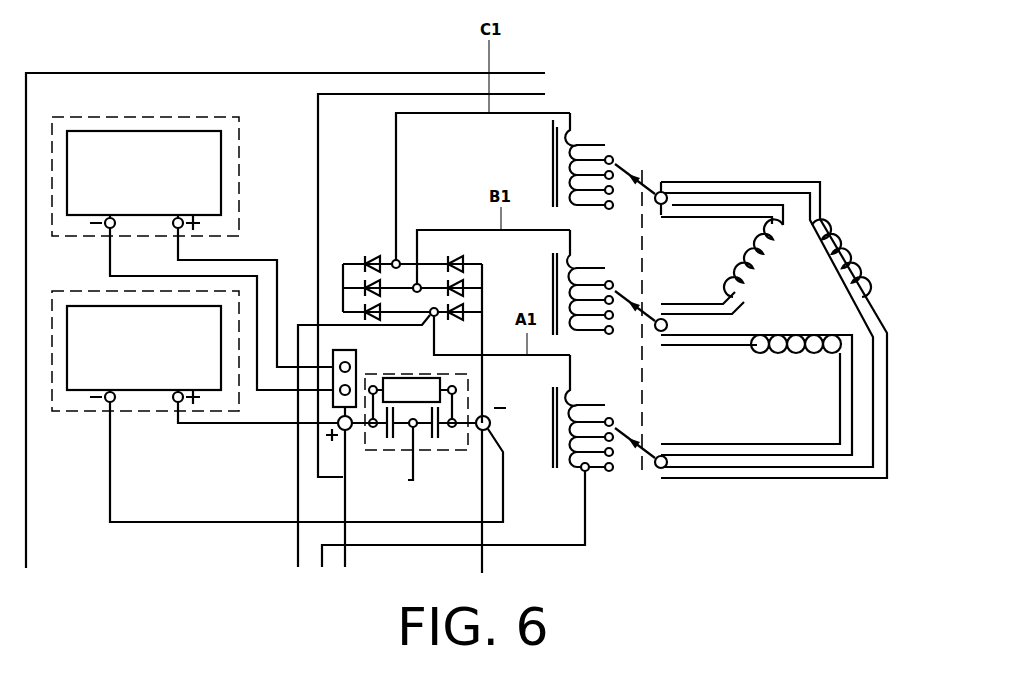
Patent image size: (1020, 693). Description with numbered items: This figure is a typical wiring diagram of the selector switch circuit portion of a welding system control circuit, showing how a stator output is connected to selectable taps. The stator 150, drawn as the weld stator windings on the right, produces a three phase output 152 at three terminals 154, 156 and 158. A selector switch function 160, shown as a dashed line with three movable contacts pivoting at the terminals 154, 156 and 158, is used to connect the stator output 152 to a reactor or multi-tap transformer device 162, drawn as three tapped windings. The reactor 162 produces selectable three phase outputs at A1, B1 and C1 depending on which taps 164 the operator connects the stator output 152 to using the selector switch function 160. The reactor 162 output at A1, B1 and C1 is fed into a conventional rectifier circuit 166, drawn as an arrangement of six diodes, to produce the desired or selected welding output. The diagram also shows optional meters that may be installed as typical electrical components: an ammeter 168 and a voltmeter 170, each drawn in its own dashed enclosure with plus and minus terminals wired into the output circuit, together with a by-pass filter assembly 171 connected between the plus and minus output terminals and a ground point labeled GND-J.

The stator 150 is at (855, 225).
The three phase output 152 is at (686, 171).
The terminal 154 is at (661, 204).
The terminal 156 is at (661, 331).
The terminal 158 is at (661, 468).
The selector switch function 160 is at (644, 174).
The reactor or multi-tap transformer device 162 is at (552, 167).
The taps 164 is at (590, 126).
The rectifier circuit 166 is at (370, 243).
The ammeter 168 is at (201, 130).
The voltmeter 170 is at (82, 390).
The by-pass filter assembly 171 is at (202, 513).